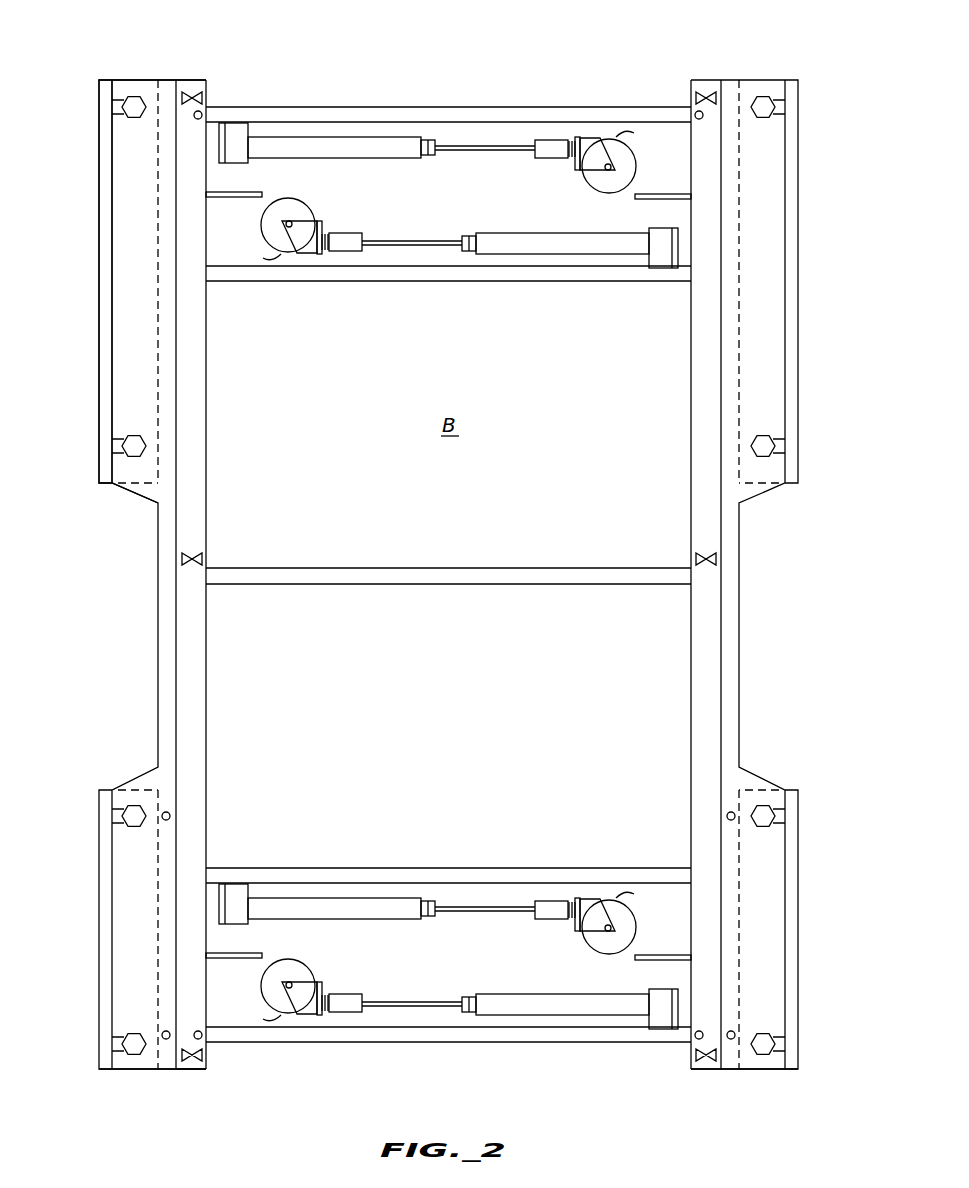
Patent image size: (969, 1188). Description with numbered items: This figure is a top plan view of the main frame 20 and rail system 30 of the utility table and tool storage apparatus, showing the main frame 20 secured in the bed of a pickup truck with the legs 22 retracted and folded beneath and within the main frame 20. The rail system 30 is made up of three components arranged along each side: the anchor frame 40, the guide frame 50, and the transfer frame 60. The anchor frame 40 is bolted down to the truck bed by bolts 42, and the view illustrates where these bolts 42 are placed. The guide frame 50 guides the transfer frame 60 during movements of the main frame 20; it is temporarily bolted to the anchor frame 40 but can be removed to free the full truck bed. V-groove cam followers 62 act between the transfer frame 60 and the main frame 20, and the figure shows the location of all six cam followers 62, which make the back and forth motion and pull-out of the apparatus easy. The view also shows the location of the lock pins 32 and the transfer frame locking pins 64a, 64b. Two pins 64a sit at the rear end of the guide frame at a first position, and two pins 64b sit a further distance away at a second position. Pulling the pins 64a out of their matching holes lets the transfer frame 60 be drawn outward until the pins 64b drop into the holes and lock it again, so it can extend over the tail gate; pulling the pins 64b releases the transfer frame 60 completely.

The main frame 20 is at (578, 108).
The legs 22 is at (500, 146).
The rail system 30 is at (190, 63).
The lock pins 32 is at (203, 113).
The anchor frame 40 is at (100, 320).
The bolts 42 is at (134, 118).
The guide frame 50 is at (128, 1064).
The transfer frame 60 is at (184, 1069).
The v-groove cam followers 62 is at (203, 97).
The first position locking pins 64a is at (163, 1030).
The second position locking pins 64b is at (172, 812).